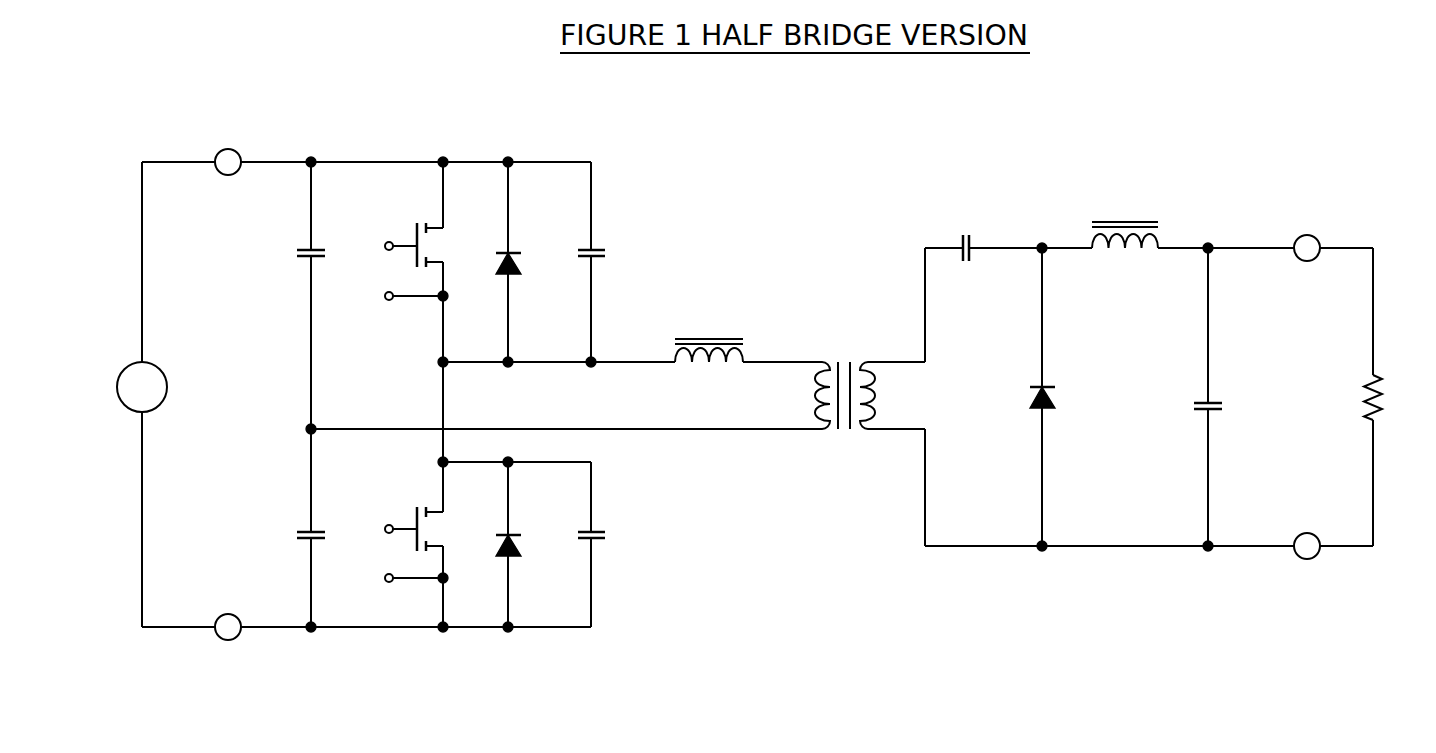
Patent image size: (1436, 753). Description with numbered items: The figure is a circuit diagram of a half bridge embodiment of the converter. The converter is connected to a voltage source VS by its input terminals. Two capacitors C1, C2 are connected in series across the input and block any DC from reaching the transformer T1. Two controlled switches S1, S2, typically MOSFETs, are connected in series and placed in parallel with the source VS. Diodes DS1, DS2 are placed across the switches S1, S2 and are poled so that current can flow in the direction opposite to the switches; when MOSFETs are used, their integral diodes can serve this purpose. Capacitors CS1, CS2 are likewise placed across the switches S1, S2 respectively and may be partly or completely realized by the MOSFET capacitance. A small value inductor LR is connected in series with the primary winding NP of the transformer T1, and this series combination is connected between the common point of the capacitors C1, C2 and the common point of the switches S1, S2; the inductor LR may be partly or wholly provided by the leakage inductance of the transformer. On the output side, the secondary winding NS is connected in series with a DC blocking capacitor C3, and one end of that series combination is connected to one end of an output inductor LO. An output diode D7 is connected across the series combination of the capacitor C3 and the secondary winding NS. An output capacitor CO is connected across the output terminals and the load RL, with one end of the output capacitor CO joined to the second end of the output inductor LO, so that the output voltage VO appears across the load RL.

The voltage source VS is at (120, 394).
The capacitor C1 is at (296, 295).
The capacitor C2 is at (296, 528).
The controlled switch S1 is at (404, 312).
The controlled switch S2 is at (395, 544).
The diode DS1 is at (525, 262).
The diode DS2 is at (525, 544).
The capacitor CS1 is at (606, 262).
The capacitor CS2 is at (606, 544).
The inductor LR is at (748, 338).
The transformer T1 is at (846, 381).
The primary winding NP is at (803, 395).
The secondary winding NS is at (888, 395).
The DC blocking capacitor C3 is at (983, 233).
The output inductor LO is at (1125, 216).
The output diode D7 is at (1022, 397).
The output capacitor CO is at (1221, 397).
The load RL is at (1353, 397).
The output voltage VO is at (1409, 391).